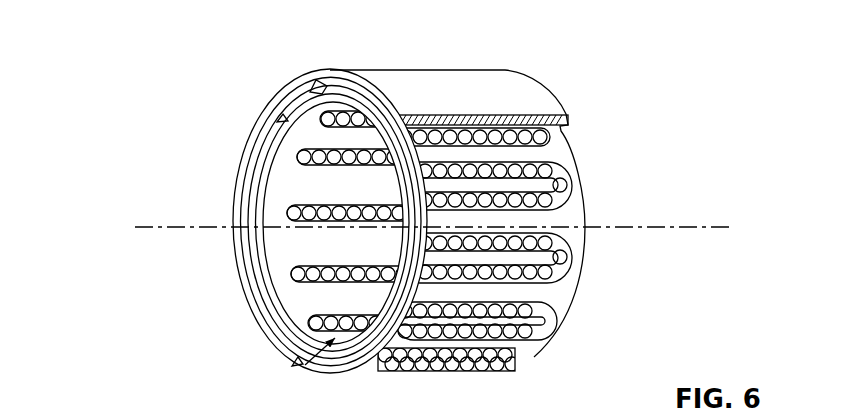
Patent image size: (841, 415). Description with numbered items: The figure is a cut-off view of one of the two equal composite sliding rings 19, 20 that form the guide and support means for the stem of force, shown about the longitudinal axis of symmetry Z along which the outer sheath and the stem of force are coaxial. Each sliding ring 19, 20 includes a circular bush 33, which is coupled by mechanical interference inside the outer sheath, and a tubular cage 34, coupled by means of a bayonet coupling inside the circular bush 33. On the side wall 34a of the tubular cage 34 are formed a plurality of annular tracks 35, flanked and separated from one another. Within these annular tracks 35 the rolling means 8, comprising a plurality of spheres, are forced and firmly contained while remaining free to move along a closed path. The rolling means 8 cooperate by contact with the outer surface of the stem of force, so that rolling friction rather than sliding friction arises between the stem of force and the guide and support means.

The composite sliding ring 19 is at (165, 42).
The composite sliding ring 20 is at (432, 209).
The circular bush 33 is at (462, 82).
The tubular cage 34 is at (313, 120).
The side wall 34a is at (295, 362).
The annular track 35 is at (556, 157).
The rolling means 8 is at (298, 157).
The longitudinal axis of symmetry Z is at (693, 228).